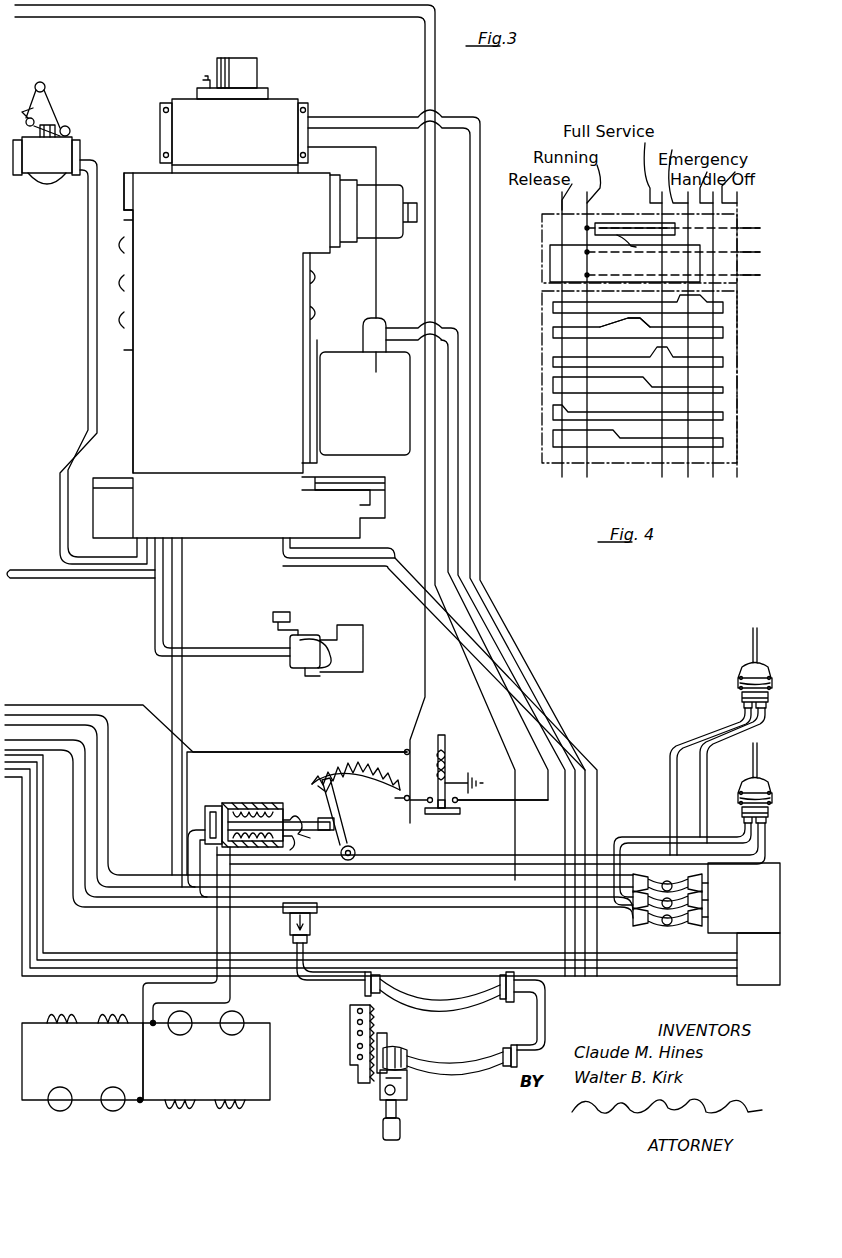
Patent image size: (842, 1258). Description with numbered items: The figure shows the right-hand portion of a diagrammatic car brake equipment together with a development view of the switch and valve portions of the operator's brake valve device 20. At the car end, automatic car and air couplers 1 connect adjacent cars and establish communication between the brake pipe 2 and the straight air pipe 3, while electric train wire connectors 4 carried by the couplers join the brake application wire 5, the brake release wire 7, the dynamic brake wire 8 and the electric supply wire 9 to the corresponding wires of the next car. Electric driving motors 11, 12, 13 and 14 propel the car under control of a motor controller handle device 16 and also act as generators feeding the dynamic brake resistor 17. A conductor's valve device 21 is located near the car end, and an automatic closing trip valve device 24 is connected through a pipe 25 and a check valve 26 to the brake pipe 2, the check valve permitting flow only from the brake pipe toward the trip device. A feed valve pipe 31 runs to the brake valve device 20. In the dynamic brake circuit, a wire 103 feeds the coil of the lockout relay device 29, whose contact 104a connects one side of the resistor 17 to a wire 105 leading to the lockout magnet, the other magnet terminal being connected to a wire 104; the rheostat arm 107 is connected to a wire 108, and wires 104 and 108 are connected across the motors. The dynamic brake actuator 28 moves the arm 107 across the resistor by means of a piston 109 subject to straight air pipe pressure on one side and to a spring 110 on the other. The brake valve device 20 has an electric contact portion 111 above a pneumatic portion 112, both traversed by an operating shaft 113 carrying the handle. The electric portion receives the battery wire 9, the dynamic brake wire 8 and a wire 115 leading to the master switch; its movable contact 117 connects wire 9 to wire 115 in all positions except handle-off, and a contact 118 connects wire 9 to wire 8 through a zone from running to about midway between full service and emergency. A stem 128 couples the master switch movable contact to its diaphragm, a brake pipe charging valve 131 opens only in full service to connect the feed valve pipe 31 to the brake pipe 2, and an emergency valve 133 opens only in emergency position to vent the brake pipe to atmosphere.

In FIG. 3, the automatic car and air couplers 1 is at (766, 865).
In FIG. 3, the brake pipe 2 is at (138, 910).
In FIG. 3, the straight air pipe 3 is at (163, 892).
In FIG. 3, the electric train wire connectors 4 is at (766, 984).
In FIG. 3, the brake application wire 5 is at (268, 953).
In FIG. 3, the brake release wire 7 is at (73, 960).
In FIG. 3, the dynamic brake wire 8 is at (107, 968).
In FIG. 4, the dynamic brake wire 8 is at (758, 228).
In FIG. 3, the electric supply wire 9 is at (88, 977).
In FIG. 4, the electric supply wire 9 is at (758, 252).
In FIG. 3, the electric driving motor 11 is at (69, 1088).
In FIG. 3, the electric driving motor 12 is at (121, 1088).
In FIG. 3, the electric driving motor 13 is at (176, 1036).
In FIG. 3, the electric driving motor 14 is at (228, 1036).
In FIG. 3, the motor controller handle device 16 is at (364, 624).
In FIG. 3, the dynamic brake resistor 17 is at (356, 785).
In FIG. 3, the operator's brake valve device 20 is at (148, 170).
In FIG. 3, the conductor's valve device 21 is at (78, 125).
In FIG. 3, the automatic closing trip valve device 24 is at (405, 1095).
In FIG. 3, the pipe 25 is at (310, 986).
In FIG. 3, the check valve 26 is at (318, 930).
In FIG. 3, the dynamic brake actuator 28 is at (262, 802).
In FIG. 3, the lockout relay device 29 is at (487, 762).
In FIG. 3, the feed valve pipe 31 is at (108, 820).
In FIG. 3, the wire 103 is at (362, 752).
In FIG. 3, the wire 104 is at (425, 697).
In FIG. 3, the contact 104a is at (442, 815).
In FIG. 3, the wire 105 is at (486, 815).
In FIG. 3, the rheostat arm 107 is at (346, 834).
In FIG. 3, the wire 108 is at (298, 831).
In FIG. 3, the piston 109 is at (218, 807).
In FIG. 3, the spring 110 is at (231, 805).
In FIG. 3, the electric contact portion 111 is at (287, 93).
In FIG. 4, the electric contact portion 111 is at (536, 226).
In FIG. 3, the pneumatic portion 112 is at (128, 421).
In FIG. 4, the pneumatic portion 112 is at (538, 323).
In FIG. 3, the operating shaft 113 is at (233, 60).
In FIG. 3, the wire 115 is at (376, 278).
In FIG. 4, the wire 115 is at (758, 276).
In FIG. 4, the movable contact 117 is at (550, 259).
In FIG. 4, the contact 118 is at (638, 222).
In FIG. 4, the stem 128 is at (640, 318).
In FIG. 4, the brake pipe charging or emergency application release valve 131 is at (663, 347).
In FIG. 4, the emergency valve 133 is at (707, 298).